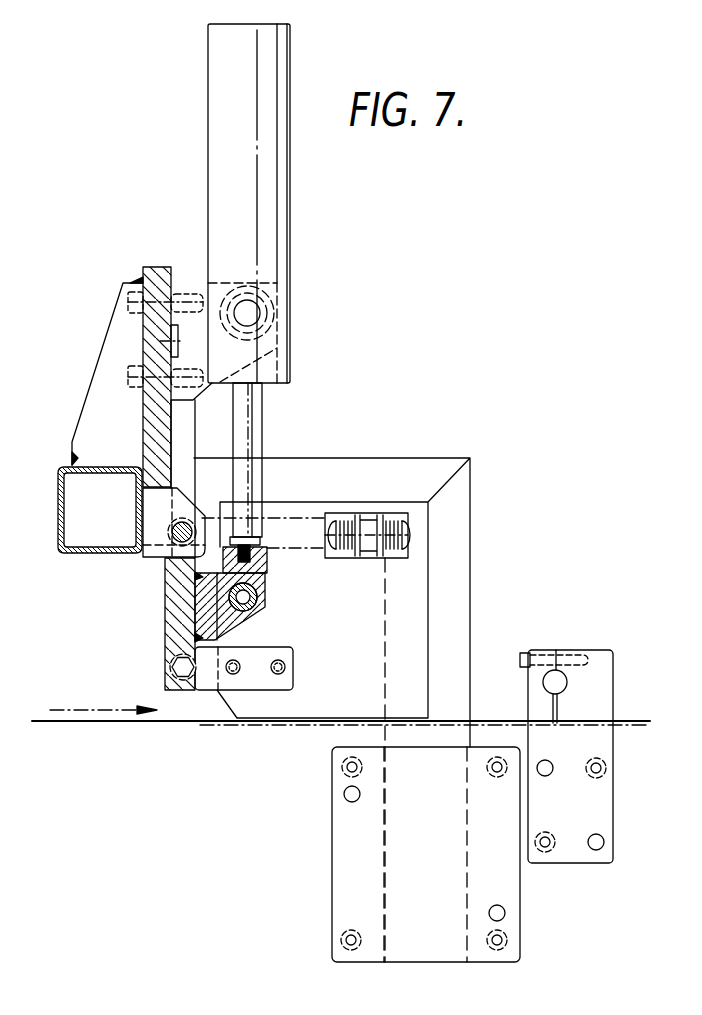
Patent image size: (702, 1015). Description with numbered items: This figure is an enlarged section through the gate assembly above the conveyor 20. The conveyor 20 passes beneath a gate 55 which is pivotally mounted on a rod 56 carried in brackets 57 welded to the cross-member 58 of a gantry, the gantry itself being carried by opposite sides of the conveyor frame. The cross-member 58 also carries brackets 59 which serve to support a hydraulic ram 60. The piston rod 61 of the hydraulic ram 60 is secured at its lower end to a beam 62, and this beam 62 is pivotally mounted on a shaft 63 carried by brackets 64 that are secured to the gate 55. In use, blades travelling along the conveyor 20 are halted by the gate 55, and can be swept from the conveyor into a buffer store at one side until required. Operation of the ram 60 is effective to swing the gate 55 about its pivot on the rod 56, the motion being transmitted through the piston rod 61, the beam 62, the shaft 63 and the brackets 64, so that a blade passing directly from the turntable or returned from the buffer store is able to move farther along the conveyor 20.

The conveyor 20 is at (38, 720).
The gate 55 is at (173, 622).
The rod 56 is at (175, 542).
The brackets 57 is at (148, 520).
The cross-member 58 is at (58, 521).
The brackets 59 is at (122, 337).
The hydraulic ram 60 is at (263, 257).
The piston rod 61 is at (243, 435).
The beam 62 is at (260, 563).
The shaft 63 is at (253, 600).
The brackets 64 is at (233, 622).